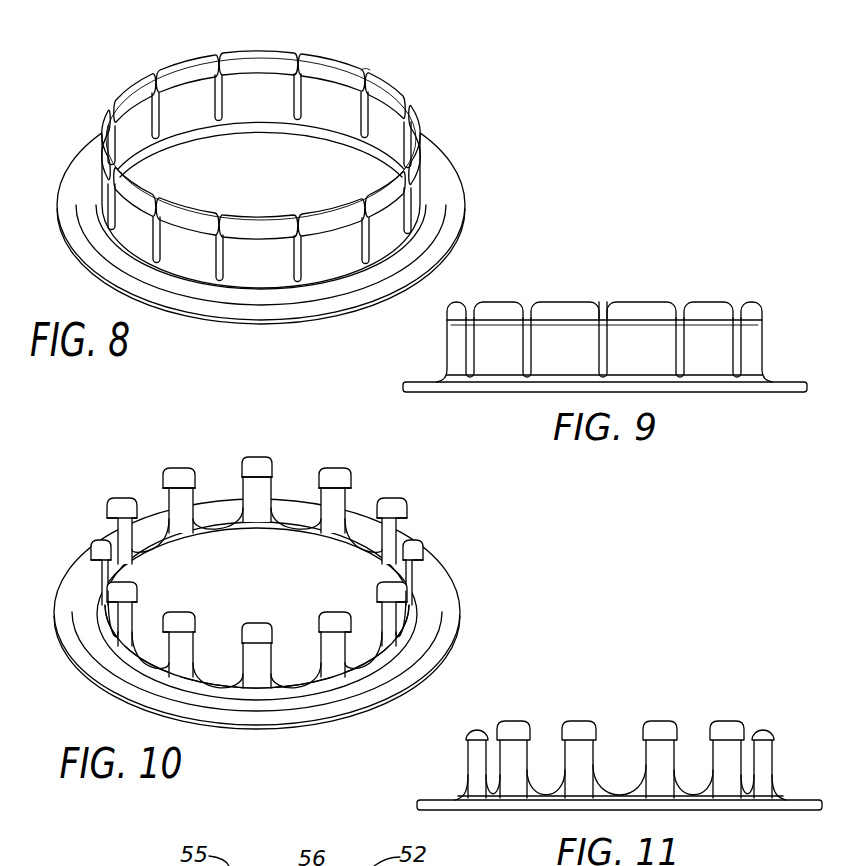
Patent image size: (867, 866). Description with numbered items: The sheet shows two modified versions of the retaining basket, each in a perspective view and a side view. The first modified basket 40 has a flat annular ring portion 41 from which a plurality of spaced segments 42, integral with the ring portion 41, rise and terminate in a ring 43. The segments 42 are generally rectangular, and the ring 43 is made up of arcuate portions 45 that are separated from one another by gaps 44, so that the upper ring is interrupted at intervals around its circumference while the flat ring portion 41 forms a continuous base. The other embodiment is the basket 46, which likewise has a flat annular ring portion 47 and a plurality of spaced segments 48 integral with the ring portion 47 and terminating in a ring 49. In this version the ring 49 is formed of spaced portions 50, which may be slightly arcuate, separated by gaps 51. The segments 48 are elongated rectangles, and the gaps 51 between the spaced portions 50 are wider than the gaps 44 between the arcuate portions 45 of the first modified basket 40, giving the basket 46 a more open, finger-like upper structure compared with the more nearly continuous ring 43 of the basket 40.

In FIG. 8, the first modified basket 40 is at (305, 180).
In FIG. 9, the first modified basket 40 is at (587, 302).
In FIG. 8, the flat annular ring portion 41 is at (424, 242).
In FIG. 9, the flat annular ring portion 41 is at (422, 382).
In FIG. 8, the spaced segments 42 is at (336, 253).
In FIG. 8, the ring 43 is at (366, 64).
In FIG. 9, the ring 43 is at (584, 296).
In FIG. 8, the gaps 44 is at (297, 60).
In FIG. 8, the arcuate portions 45 is at (192, 71).
In FIG. 10, the basket 46 is at (281, 552).
In FIG. 11, the basket 46 is at (601, 743).
In FIG. 10, the flat annular ring portion 47 is at (424, 630).
In FIG. 11, the flat annular ring portion 47 is at (438, 799).
In FIG. 10, the spaced segments 48 is at (330, 657).
In FIG. 11, the spaced segments 48 is at (512, 765).
In FIG. 10, the ring 49 is at (336, 460).
In FIG. 10, the spaced portions 50 is at (253, 465).
In FIG. 11, the spaced portions 50 is at (578, 722).
In FIG. 10, the gaps 51 is at (197, 494).
In FIG. 11, the gaps 51 is at (594, 749).